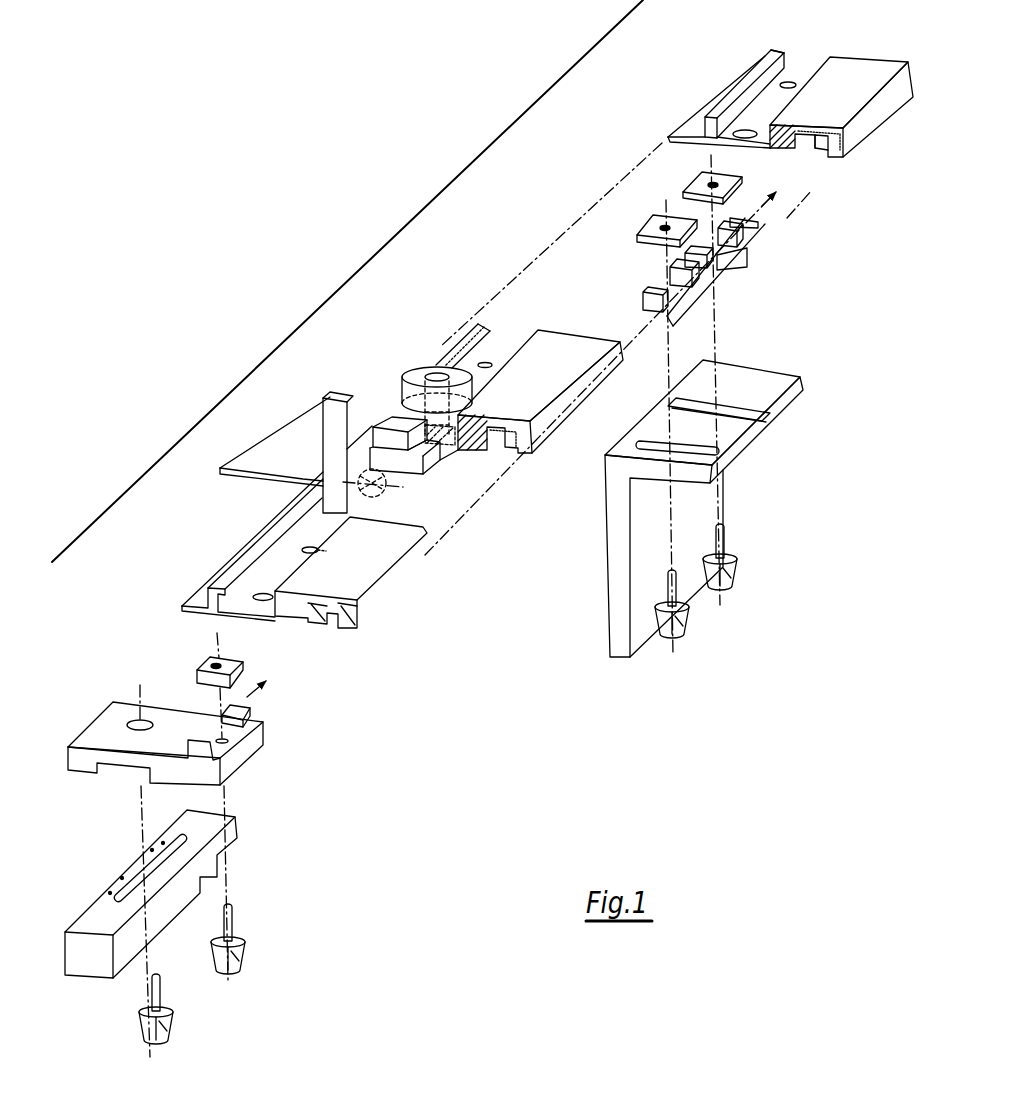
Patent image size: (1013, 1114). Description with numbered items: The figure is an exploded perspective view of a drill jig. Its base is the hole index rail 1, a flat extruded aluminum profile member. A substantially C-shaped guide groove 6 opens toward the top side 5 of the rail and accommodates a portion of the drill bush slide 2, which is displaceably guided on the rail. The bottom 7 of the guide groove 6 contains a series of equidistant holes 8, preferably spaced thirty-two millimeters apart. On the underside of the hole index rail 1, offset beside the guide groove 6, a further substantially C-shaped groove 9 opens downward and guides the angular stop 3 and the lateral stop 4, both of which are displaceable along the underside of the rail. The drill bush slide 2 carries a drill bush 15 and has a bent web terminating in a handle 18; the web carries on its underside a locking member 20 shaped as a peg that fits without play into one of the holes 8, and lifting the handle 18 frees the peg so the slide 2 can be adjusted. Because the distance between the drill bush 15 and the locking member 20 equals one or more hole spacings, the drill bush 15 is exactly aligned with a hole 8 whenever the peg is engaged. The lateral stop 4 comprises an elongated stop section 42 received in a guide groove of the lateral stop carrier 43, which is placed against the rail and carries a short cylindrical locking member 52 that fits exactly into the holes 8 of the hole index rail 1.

The hole index rail 1 is at (878, 126).
The drill bush slide 2 is at (407, 360).
The angular stop 3 is at (800, 650).
The lateral stop 4 is at (307, 1053).
The top side 5 is at (855, 71).
The guide groove 6 is at (820, 43).
The bottom 7 is at (745, 130).
The holes 8 is at (790, 82).
The further C-shaped groove 9 is at (823, 157).
The drill bush 15 is at (437, 368).
The handle 18 is at (288, 448).
The locking member 20 is at (388, 490).
The elongated stop section 42 is at (98, 967).
The lateral stop carrier 43 is at (247, 748).
The locking member 52 is at (147, 722).